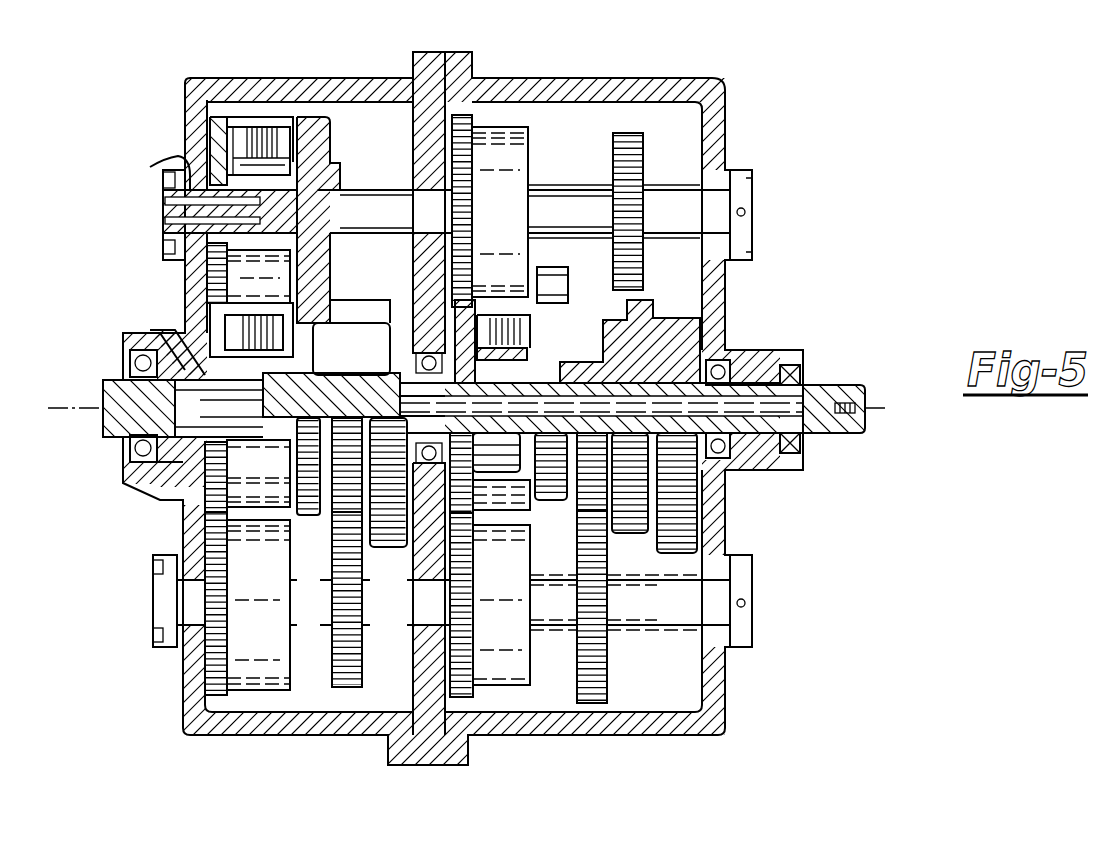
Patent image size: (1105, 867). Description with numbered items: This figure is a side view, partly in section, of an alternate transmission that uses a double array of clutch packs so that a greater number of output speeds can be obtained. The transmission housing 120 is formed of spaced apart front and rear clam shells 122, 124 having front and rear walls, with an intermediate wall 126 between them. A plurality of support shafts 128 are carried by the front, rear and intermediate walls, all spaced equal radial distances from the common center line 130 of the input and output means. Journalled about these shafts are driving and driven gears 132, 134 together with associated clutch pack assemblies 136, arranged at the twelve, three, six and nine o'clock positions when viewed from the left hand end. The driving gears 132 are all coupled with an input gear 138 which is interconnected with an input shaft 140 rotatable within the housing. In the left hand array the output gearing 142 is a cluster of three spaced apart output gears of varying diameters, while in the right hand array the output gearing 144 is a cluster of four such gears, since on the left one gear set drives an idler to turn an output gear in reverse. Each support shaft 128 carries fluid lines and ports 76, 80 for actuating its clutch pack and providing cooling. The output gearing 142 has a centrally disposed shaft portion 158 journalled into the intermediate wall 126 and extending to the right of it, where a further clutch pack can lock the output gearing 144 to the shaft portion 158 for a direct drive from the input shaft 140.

The fluid line and port 76 is at (150, 167).
The fluid line and port 80 is at (168, 230).
The transmission housing 120 is at (706, 74).
The front clam shell 122 is at (272, 92).
The rear clam shell 124 is at (714, 138).
The intermediate wall 126 is at (472, 76).
The support shaft 128 is at (367, 200).
The common center line 130 is at (875, 407).
The driving gear 132 is at (220, 120).
The driven gear 134 is at (307, 118).
The clutch pack assembly 136 is at (258, 118).
The input gear 138 is at (210, 312).
The input shaft 140 is at (125, 425).
The left hand output gearing 142 is at (448, 270).
The right hand output gearing 144 is at (624, 345).
The shaft portion 158 is at (397, 390).